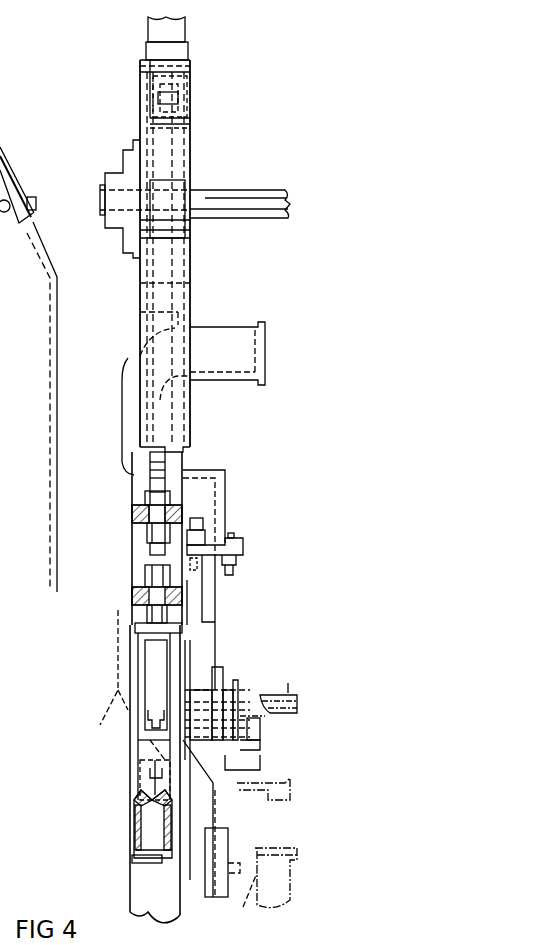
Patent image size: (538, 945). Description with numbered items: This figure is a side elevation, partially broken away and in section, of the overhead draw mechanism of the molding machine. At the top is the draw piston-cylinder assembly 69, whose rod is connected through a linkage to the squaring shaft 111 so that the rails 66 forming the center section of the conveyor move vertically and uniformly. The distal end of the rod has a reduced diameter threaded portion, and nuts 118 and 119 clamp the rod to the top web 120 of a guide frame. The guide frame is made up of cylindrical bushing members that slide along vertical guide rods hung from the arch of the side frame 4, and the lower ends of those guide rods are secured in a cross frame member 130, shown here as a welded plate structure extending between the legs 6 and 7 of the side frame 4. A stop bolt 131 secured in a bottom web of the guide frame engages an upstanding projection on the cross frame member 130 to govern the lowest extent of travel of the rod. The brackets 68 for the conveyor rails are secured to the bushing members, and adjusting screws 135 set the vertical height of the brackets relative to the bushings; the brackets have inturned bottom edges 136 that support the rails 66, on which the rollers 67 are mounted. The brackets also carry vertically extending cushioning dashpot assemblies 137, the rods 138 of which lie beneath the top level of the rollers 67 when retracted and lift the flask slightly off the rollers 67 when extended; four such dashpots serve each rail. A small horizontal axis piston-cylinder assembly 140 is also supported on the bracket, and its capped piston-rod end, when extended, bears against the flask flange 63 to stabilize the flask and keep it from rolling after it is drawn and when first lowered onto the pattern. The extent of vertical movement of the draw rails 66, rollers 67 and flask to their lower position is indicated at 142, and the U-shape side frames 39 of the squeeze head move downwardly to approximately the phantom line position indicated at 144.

The side frame 4 is at (40, 376).
The leg 6 is at (135, 890).
The leg 7 is at (182, 328).
The U-shape side frames 39 is at (134, 476).
The flask flange 63 is at (274, 688).
The rails 66 is at (250, 748).
The rollers 67 is at (246, 708).
The brackets 68 is at (210, 625).
The draw piston-cylinder assembly 69 is at (187, 28).
The squaring shaft 111 is at (256, 200).
The nut 118 is at (145, 498).
The nut 119 is at (147, 535).
The top web 120 is at (132, 515).
The cross frame member 130 is at (134, 840).
The stop bolt 131 is at (136, 630).
The adjusting screws 135 is at (203, 525).
The inturned bottom edges 136 is at (240, 763).
The cushioning dashpot assemblies 137 is at (250, 790).
The rods 138 is at (252, 718).
The horizontal axis piston-cylinder assembly 140 is at (215, 768).
The lower position of draw rails 142 is at (245, 895).
The phantom line position of side frames 144 is at (125, 685).